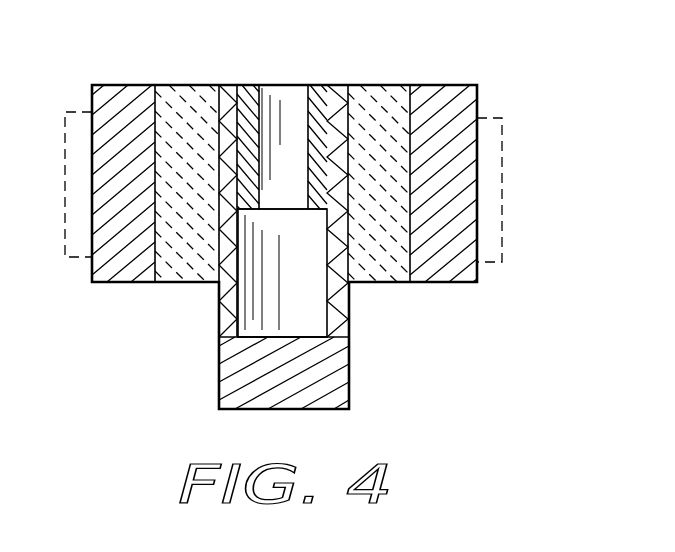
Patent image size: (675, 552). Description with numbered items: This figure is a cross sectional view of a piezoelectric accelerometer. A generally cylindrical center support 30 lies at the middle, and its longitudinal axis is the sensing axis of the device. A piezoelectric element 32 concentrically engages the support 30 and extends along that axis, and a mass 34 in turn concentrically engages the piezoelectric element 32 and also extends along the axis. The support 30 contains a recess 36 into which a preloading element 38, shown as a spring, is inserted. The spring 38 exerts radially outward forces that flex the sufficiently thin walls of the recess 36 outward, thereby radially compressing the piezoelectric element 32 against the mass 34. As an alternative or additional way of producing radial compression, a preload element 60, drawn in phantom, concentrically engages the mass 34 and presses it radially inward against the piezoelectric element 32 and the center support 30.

The support 30 is at (335, 380).
The piezoelectric element 32 is at (397, 283).
The mass 34 is at (463, 283).
The recess 36 is at (240, 280).
The preloading element 38 is at (307, 108).
The preload element 60 is at (502, 212).